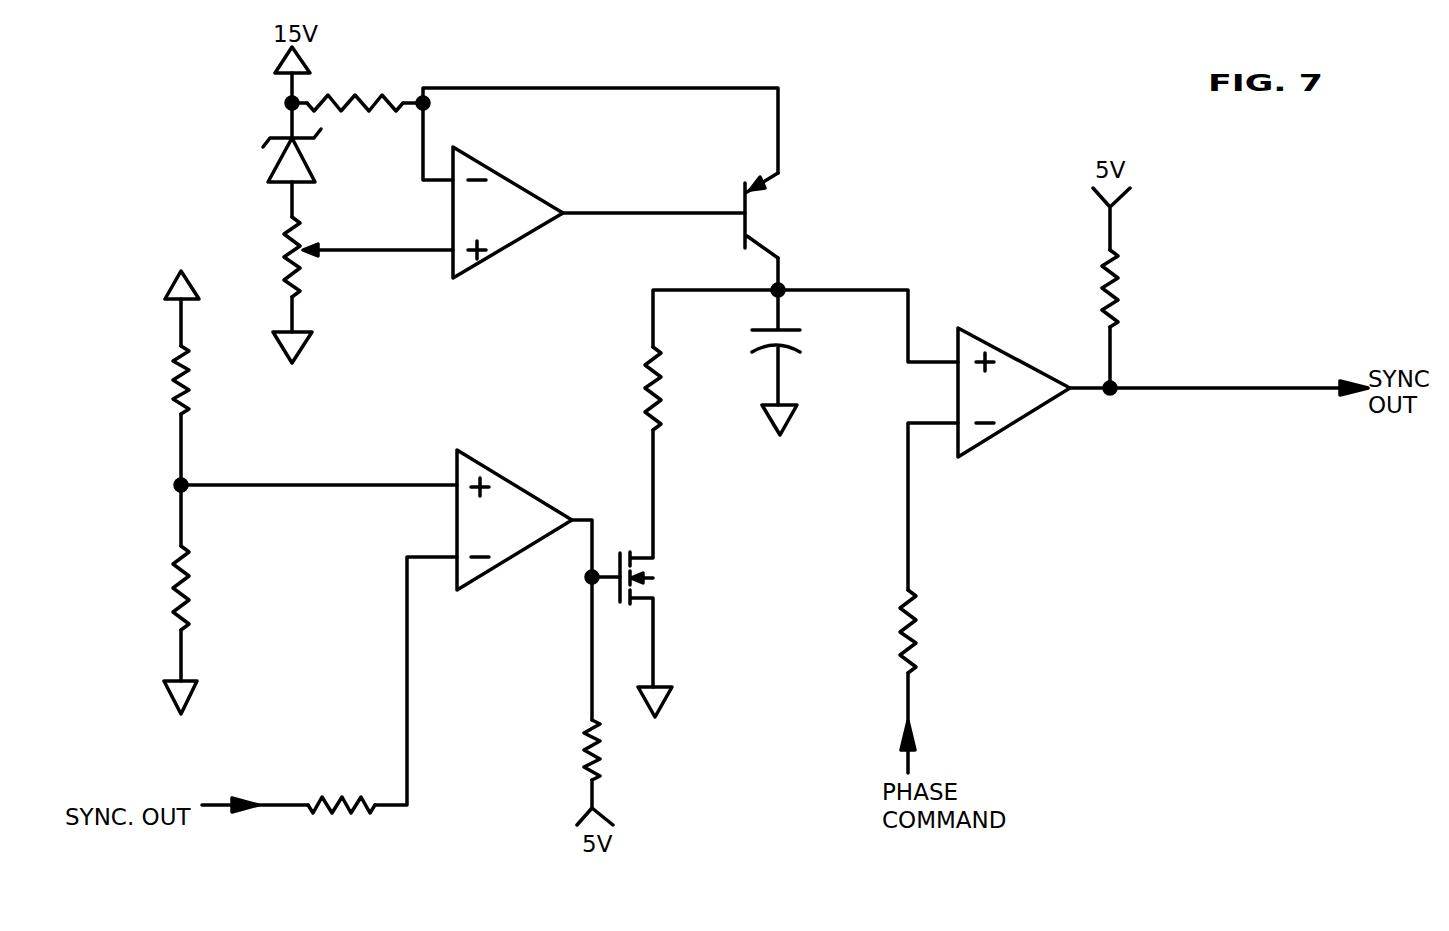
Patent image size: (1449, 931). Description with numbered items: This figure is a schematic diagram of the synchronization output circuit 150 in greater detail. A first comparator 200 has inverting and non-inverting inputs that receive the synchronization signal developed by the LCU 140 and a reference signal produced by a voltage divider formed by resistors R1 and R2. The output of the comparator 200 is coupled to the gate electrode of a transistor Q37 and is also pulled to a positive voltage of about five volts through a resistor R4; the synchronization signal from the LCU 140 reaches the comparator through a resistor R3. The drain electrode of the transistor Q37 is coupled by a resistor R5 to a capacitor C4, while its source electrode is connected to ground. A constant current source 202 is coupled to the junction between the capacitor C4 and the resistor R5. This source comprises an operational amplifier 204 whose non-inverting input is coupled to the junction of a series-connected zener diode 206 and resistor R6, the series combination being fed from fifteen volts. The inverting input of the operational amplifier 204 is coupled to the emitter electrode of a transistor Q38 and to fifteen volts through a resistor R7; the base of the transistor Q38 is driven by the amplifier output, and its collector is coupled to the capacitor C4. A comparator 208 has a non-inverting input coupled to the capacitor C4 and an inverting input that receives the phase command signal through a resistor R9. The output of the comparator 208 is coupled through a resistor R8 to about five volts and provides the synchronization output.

The synchronization output circuit 150 is at (1101, 685).
The first comparator 200 is at (518, 503).
The constant current source 202 is at (485, 81).
The operational amplifier 204 is at (515, 227).
The zener diode 206 is at (278, 163).
The comparator 208 is at (1022, 370).
The LCU 140 is at (113, 792).
The resistor R1 is at (178, 372).
The resistor R2 is at (178, 589).
The resistor R3 is at (340, 802).
The resistor R4 is at (590, 768).
The resistor R5 is at (652, 372).
The resistor R6 is at (303, 277).
The resistor R7 is at (370, 100).
The resistor R8 is at (1118, 300).
The resistor R9 is at (914, 650).
The capacitor C4 is at (765, 348).
The transistor Q37 is at (635, 560).
The transistor Q38 is at (762, 240).